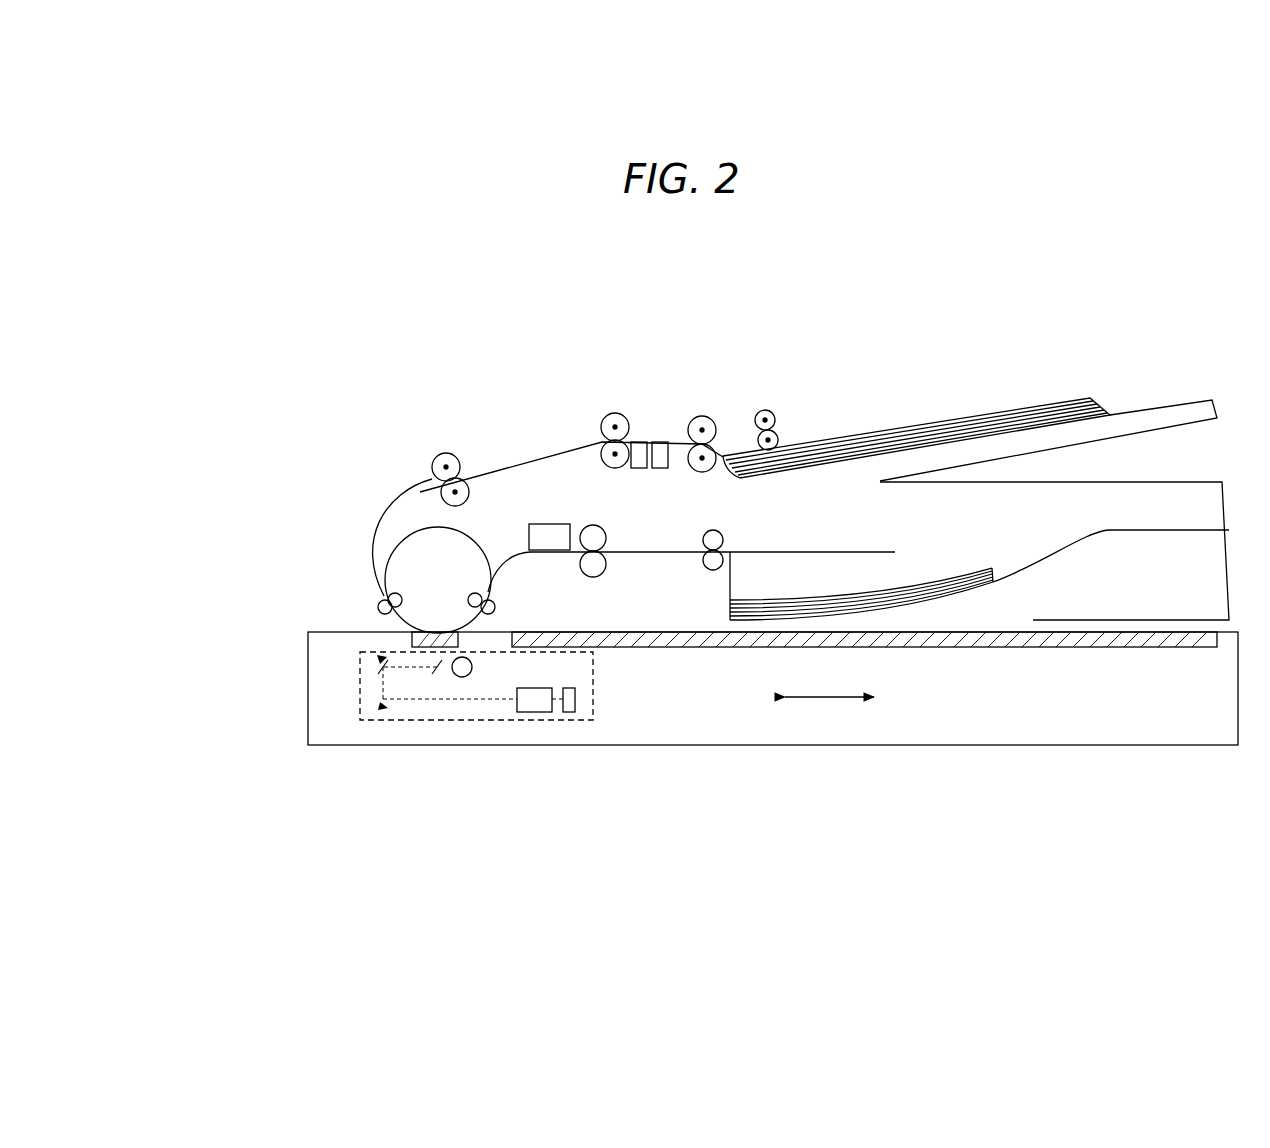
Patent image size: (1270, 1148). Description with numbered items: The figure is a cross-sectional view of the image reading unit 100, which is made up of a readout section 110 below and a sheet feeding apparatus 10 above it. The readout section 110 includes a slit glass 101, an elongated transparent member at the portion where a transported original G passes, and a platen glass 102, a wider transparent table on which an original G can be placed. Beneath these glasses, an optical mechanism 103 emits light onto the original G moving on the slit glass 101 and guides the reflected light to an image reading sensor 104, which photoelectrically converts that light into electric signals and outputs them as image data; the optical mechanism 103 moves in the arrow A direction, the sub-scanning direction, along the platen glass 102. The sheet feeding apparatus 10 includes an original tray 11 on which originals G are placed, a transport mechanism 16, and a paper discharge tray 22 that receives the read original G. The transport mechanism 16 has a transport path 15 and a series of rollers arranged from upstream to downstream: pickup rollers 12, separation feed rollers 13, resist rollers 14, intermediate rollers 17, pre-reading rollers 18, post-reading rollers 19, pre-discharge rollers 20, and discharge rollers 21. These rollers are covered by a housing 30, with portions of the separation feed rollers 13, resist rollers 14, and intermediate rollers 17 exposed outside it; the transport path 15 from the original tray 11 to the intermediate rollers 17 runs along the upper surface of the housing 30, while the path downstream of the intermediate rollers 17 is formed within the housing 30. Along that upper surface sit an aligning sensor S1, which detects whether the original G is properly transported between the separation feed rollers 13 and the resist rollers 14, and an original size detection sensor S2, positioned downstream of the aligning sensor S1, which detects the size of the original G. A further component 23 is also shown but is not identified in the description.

The image reading unit 100 is at (178, 534).
The sheet feeding apparatus 10 is at (288, 543).
The readout section 110 is at (288, 689).
The housing 30 is at (752, 316).
The original tray 11 is at (1145, 410).
The pickup rollers 12 is at (780, 435).
The separation feed rollers 13 is at (688, 455).
The resist rollers 14 is at (600, 452).
The transport path 15 is at (397, 512).
The transport mechanism 16 is at (489, 418).
The intermediate rollers 17 is at (480, 478).
The pre-reading rollers 18 is at (378, 603).
The post-reading rollers 19 is at (498, 610).
The pre-discharge rollers 20 is at (610, 575).
The discharge rollers 21 is at (707, 571).
The paper discharge tray 22 is at (1103, 540).
The image sensor 23 is at (552, 523).
The aligning sensor S1 is at (660, 468).
The original size detection sensor S2 is at (640, 468).
The original G is at (1050, 400).
The slit glass 101 is at (413, 635).
The platen glass 102 is at (863, 648).
The optical mechanism 103 is at (465, 723).
The image reading sensor 104 is at (577, 695).
The arrow A direction A is at (827, 698).